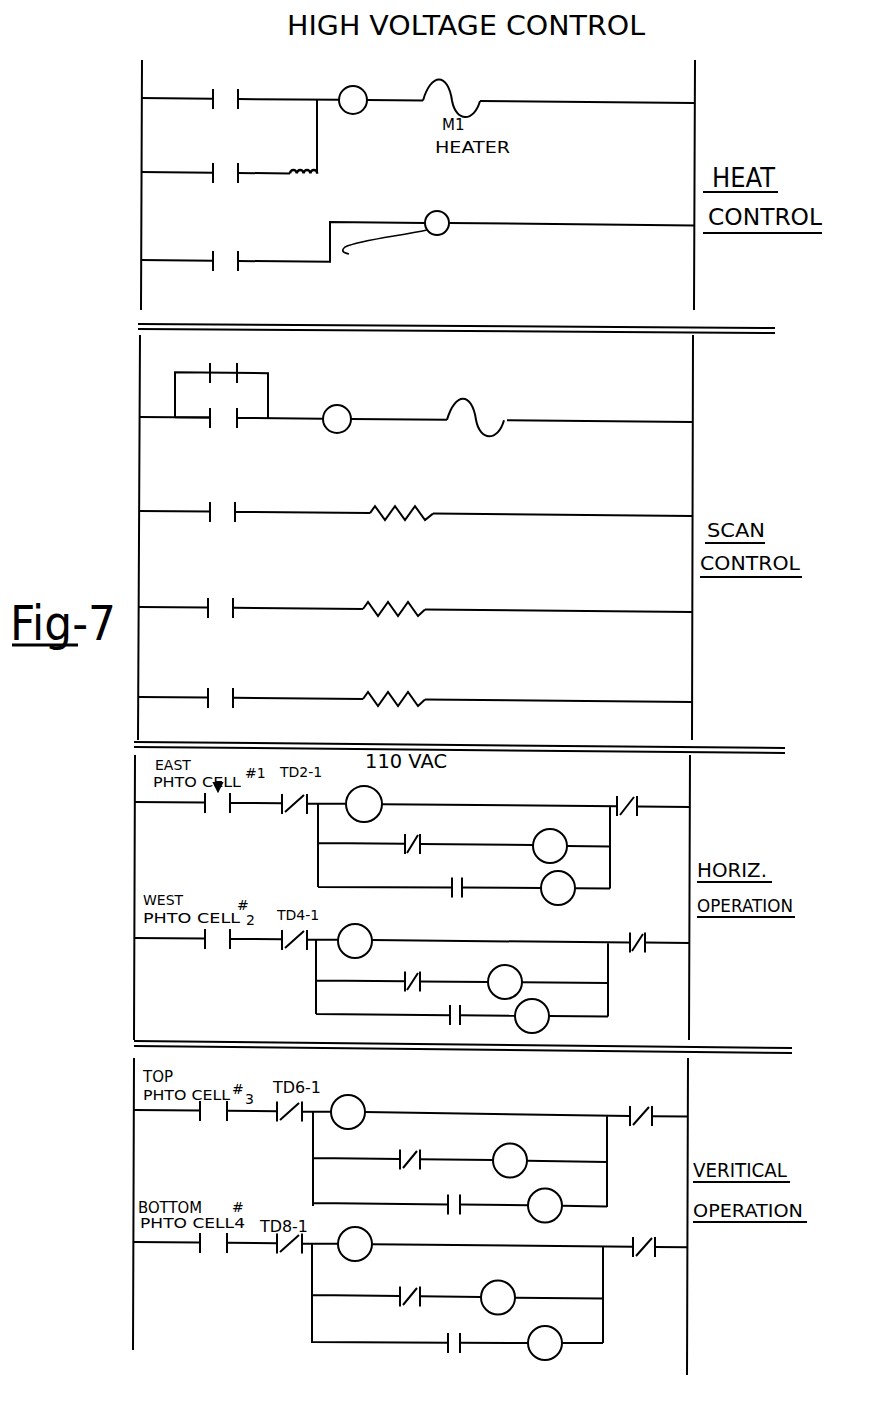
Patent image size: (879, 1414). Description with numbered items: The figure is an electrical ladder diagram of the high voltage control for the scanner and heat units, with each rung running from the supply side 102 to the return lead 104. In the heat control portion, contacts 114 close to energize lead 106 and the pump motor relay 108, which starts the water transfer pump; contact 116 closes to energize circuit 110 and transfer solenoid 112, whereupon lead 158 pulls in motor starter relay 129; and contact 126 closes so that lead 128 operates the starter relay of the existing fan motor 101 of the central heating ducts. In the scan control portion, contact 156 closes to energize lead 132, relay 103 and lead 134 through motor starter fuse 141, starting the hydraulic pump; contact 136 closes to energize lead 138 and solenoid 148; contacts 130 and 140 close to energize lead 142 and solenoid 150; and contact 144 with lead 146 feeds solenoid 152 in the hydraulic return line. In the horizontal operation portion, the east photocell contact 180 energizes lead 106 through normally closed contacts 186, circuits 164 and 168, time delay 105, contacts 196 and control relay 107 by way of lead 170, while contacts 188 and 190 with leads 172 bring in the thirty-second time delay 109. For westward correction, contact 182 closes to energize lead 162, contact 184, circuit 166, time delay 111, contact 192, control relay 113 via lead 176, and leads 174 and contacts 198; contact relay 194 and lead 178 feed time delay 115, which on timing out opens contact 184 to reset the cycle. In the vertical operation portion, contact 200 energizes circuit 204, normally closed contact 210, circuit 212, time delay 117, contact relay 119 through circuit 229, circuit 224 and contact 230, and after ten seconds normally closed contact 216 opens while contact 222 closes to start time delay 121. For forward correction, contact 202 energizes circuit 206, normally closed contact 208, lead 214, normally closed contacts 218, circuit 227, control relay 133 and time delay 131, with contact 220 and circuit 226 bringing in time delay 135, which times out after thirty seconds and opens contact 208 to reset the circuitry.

The fan motor 101 is at (459, 200).
The supply line 102 is at (173, 705).
The relay 103 is at (346, 429).
The lead 104 is at (560, 717).
The time delay 105 is at (373, 790).
The lead 106 is at (284, 441).
The control relay 107 is at (583, 818).
The pump motor relay 108 is at (395, 91).
The time delay relay 109 is at (569, 901).
The circuit 110 is at (264, 167).
The time delay 111 is at (377, 912).
The transfer solenoid 112 is at (374, 195).
The control relay 113 is at (570, 962).
The contacts 114 is at (224, 97).
The time delay 115 is at (582, 996).
The contact 116 is at (223, 176).
The time delay 117 is at (388, 1080).
The contact relay 119 is at (542, 1135).
The time delay 121 is at (582, 1178).
The contact 126 is at (222, 264).
The lead 128 is at (650, 1240).
The motor starter relay 129 is at (366, 72).
The contact 130 is at (219, 359).
The time delay 131 is at (378, 1218).
The lead 132 is at (280, 407).
The control relay 133 is at (542, 1275).
The lead 134 is at (399, 408).
The time delay 135 is at (580, 1316).
The contact 136 is at (219, 510).
The lead 138 is at (302, 502).
The contact 140 is at (221, 607).
The motor starter fuse 141 is at (492, 433).
The line 142 is at (298, 597).
The contact C6-1 144 is at (221, 699).
The line 146 is at (298, 688).
The solenoid valve 148 is at (409, 511).
The solenoid 150 is at (400, 610).
The solenoid 152 is at (400, 701).
The contact 156 is at (221, 409).
The lead 158 is at (318, 140).
The lead 162 is at (256, 932).
The circuit 164 is at (385, 846).
The circuit 166 is at (383, 978).
The circuit 168 is at (614, 878).
The line 170 is at (476, 836).
The leads 172 is at (501, 879).
The leads 174 is at (616, 1015).
The line 176 is at (454, 972).
The line 178 is at (487, 1008).
The east photo cell #1 180 is at (221, 808).
The contact 182 is at (230, 950).
The contact 184 is at (306, 951).
The normally closed contacts 186 is at (313, 816).
The contacts 188 is at (405, 851).
The contact TD1-2 190 is at (465, 898).
The contact 192 is at (410, 992).
The contact relay 194 is at (465, 1040).
The contacts 196 is at (638, 812).
The contacts 198 is at (648, 953).
The contact 200 is at (210, 1123).
The contact 202 is at (211, 1253).
The circuit 204 is at (252, 1119).
The circuit 206 is at (252, 1252).
The normally closed contact 208 is at (300, 1254).
The normally closed contact 210 is at (300, 1122).
The circuit 212 is at (380, 1159).
The lead 214 is at (380, 1293).
The normally closed contact 216 is at (408, 1170).
The normally closed contacts 218 is at (410, 1307).
The contact TD7-2 220 is at (467, 1368).
The contact 222 is at (461, 1215).
The circuit 224 is at (614, 1182).
The circuit 226 is at (615, 1320).
The circuit 227 is at (450, 1291).
The line 229 is at (456, 1151).
The contact 230 is at (650, 1125).